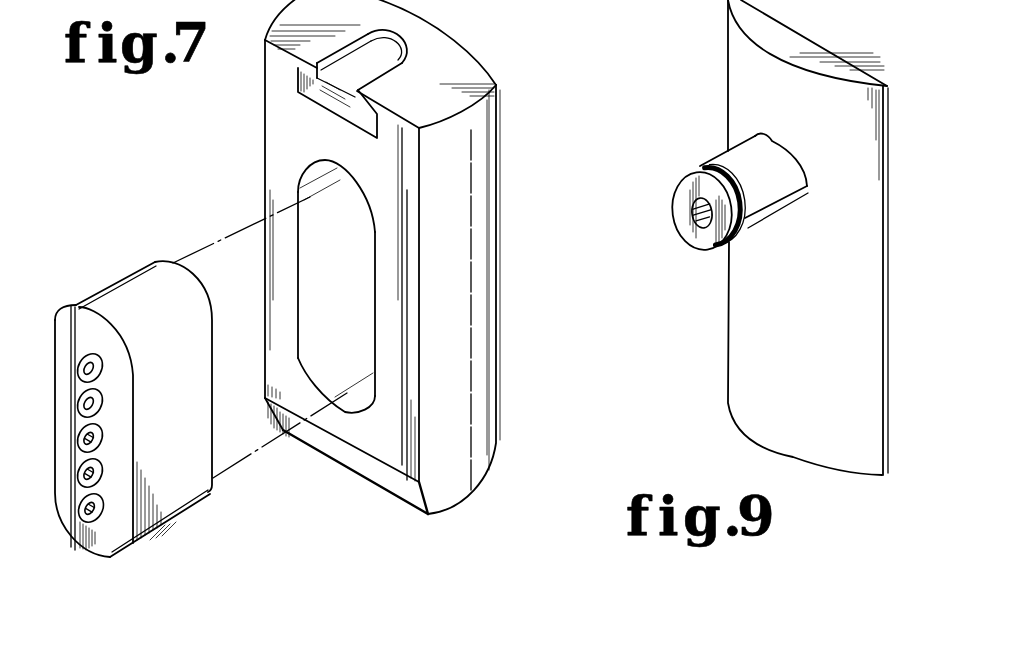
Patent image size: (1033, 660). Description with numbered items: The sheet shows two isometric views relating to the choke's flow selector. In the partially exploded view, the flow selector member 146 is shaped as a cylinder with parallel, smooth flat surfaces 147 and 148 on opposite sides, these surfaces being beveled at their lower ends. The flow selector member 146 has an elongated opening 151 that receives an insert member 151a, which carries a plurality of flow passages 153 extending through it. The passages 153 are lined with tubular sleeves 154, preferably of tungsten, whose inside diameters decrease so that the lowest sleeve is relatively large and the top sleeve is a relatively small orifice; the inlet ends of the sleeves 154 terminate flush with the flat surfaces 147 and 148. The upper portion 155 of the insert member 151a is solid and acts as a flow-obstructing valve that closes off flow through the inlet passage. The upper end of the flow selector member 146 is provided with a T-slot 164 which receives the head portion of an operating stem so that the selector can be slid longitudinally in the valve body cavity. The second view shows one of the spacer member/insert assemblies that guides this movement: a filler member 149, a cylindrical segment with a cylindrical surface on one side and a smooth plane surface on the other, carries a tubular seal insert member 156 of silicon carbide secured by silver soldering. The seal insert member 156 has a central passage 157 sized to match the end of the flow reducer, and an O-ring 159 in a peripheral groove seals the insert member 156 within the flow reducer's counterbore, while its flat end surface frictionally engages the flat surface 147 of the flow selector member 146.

In FIG. 7, the flow selector member 146 is at (248, 205).
In FIG. 7, the flat surface 147 is at (373, 427).
In FIG. 7, the flat surface 148 is at (480, 350).
In FIG. 7, the elongated opening 151 is at (306, 300).
In FIG. 7, the insert member 151a is at (88, 300).
In FIG. 7, the flow passages 153 is at (80, 497).
In FIG. 7, the tubular sleeves 154 is at (80, 495).
In FIG. 7, the upper portion 155 is at (66, 330).
In FIG. 7, the T-slot 164 is at (298, 89).
In FIG. 9, the filler member 149 is at (758, 400).
In FIG. 9, the tubular seal insert member 156 is at (724, 156).
In FIG. 9, the central passage 157 is at (704, 221).
In FIG. 9, the O-ring 159 is at (752, 210).